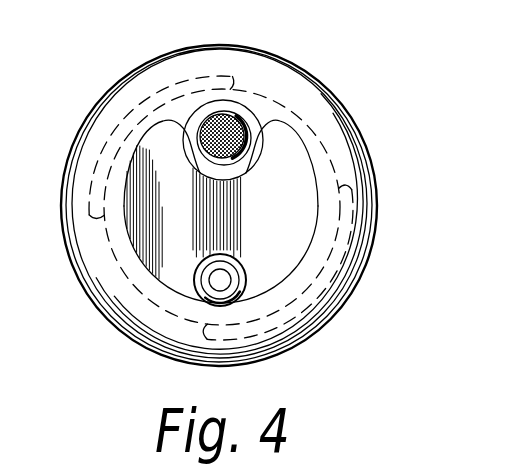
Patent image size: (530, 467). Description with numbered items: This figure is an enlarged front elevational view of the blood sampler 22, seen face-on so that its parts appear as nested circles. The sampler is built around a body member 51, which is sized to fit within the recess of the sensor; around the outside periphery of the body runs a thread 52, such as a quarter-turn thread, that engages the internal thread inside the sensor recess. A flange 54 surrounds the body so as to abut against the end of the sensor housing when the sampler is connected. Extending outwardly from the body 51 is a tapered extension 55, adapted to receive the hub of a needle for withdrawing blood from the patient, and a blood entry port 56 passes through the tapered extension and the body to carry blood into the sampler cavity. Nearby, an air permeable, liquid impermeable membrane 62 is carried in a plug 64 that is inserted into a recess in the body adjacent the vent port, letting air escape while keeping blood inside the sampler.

The blood sampler 22 is at (408, 178).
The body member 51 is at (134, 330).
The thread 52 is at (98, 175).
The flange 54 is at (241, 46).
The tapered extension 55 is at (206, 275).
The blood entry port 56 is at (228, 270).
The air permeable, liquid impermeable membrane 62 is at (226, 146).
The plug 64 is at (197, 143).